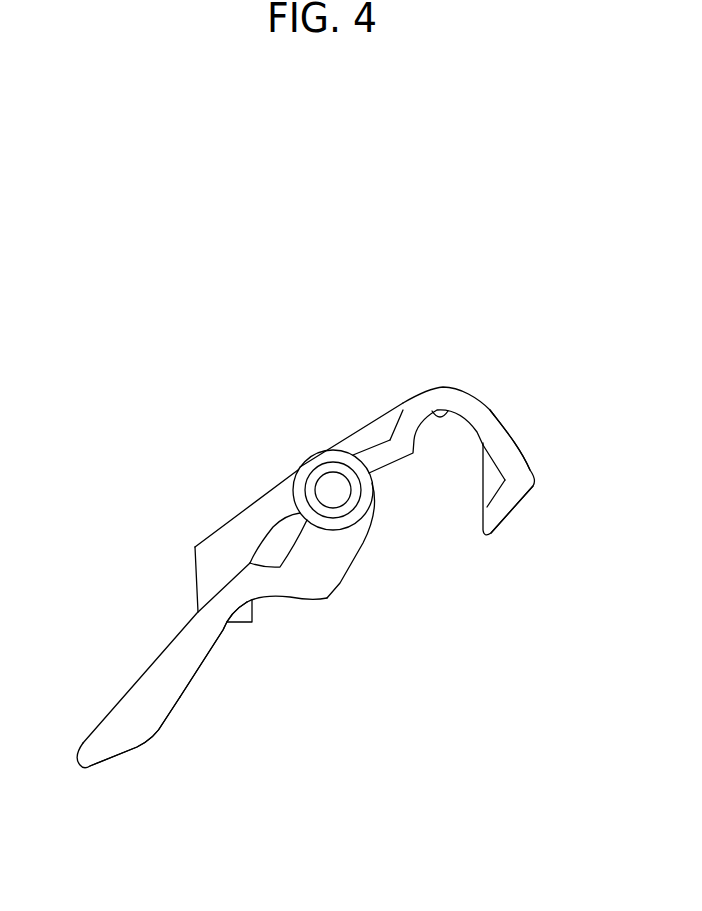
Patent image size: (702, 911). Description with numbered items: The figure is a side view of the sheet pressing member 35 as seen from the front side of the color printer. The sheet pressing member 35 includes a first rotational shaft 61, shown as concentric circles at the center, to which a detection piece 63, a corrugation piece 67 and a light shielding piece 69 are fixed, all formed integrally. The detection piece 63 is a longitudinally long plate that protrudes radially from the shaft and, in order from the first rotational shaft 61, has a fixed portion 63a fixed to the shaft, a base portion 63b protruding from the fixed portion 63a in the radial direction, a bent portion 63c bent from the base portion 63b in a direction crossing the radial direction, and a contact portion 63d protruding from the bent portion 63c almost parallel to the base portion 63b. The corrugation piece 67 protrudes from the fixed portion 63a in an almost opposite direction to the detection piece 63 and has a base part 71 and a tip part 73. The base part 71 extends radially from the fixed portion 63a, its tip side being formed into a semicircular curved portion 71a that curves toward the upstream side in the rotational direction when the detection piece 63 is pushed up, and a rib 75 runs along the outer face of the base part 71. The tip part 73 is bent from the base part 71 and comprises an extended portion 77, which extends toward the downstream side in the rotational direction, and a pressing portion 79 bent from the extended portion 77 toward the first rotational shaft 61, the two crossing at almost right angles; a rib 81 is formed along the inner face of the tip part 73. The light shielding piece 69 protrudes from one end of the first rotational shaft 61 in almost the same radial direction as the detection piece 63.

The sheet pressing member 35 is at (314, 378).
The first rotational shaft 61 is at (330, 478).
The detection piece 63 is at (112, 700).
The fixed portion 63a is at (338, 520).
The base portion 63b is at (323, 567).
The bent portion 63c is at (273, 587).
The contact portion 63d is at (165, 700).
The corrugation piece 67 is at (473, 388).
The light shielding piece 69 is at (212, 525).
The base part 71 is at (405, 417).
The curved portion 71a is at (433, 410).
The tip part 73 is at (513, 437).
The rib 75 is at (367, 433).
The extended portion 77 is at (507, 459).
The pressing portion 79 is at (503, 512).
The rib 81 is at (490, 482).